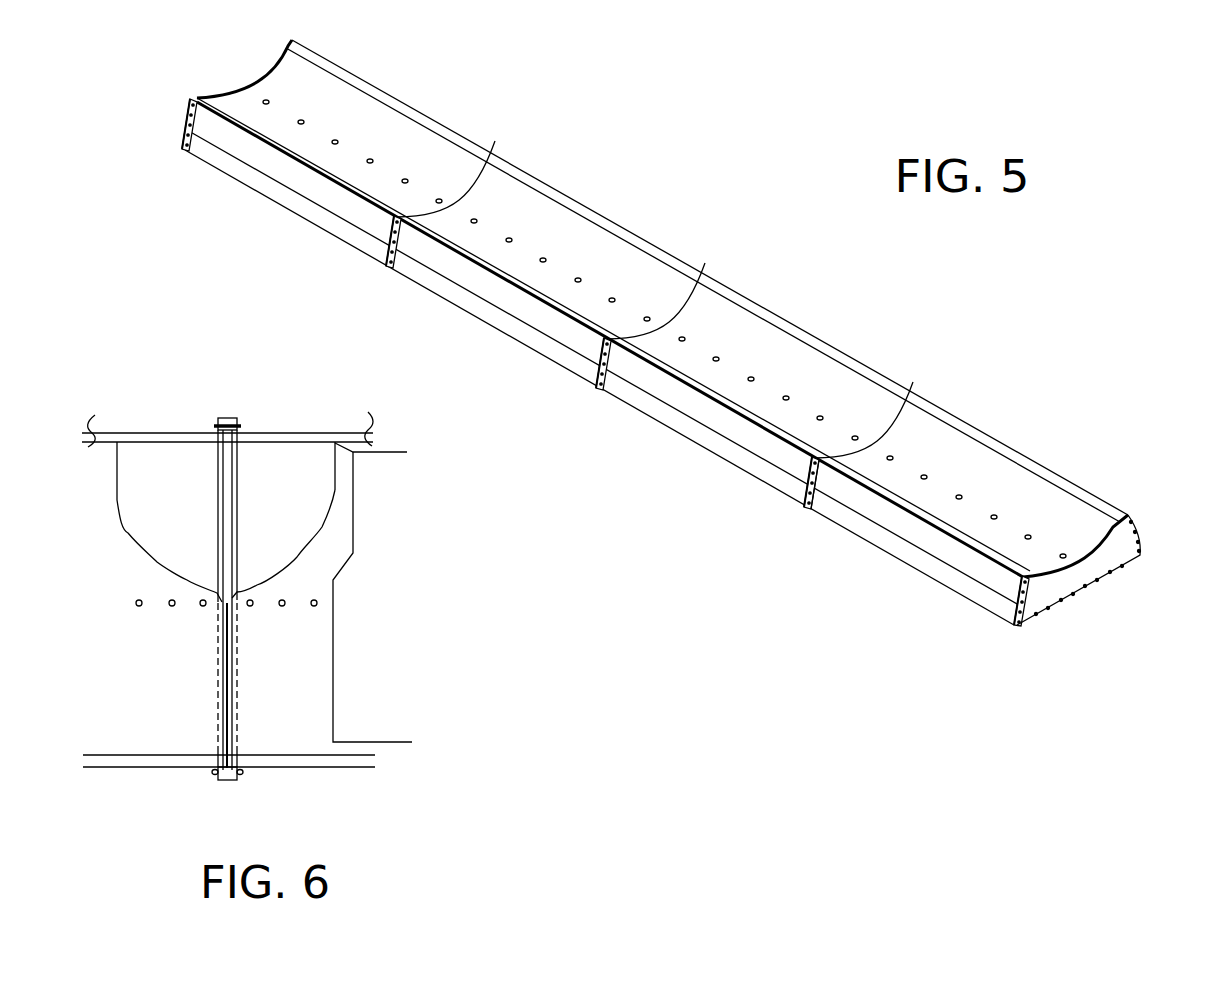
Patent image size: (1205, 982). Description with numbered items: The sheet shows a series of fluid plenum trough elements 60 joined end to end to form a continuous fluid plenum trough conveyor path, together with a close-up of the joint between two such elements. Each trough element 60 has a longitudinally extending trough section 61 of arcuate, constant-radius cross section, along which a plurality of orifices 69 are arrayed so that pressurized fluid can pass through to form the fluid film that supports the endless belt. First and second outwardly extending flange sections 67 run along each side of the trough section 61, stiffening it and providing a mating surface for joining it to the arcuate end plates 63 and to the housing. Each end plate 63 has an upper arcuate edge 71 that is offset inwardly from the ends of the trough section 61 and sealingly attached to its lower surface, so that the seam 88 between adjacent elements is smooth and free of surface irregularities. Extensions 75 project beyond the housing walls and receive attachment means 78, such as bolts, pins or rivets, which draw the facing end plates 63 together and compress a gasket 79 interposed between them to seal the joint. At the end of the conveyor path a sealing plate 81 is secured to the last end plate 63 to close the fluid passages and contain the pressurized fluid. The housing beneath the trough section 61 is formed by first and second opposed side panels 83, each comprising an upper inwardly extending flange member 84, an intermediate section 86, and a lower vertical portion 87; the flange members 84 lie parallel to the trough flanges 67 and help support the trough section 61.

In FIG. 5, the fluid plenum trough element 60 is at (326, 54).
In FIG. 5, the trough section 61 is at (388, 120).
In FIG. 6, the trough section 61 is at (153, 606).
In FIG. 5, the arcuate end plate 63 is at (188, 153).
In FIG. 6, the arcuate end plate 63 is at (220, 418).
In FIG. 5, the outwardly extending flange section 67 is at (358, 78).
In FIG. 6, the outwardly extending flange section 67 is at (95, 415).
In FIG. 5, the orifice 69 is at (264, 98).
In FIG. 6, the arcuate edge 71 is at (214, 424).
In FIG. 5, the extension 75 is at (806, 500).
In FIG. 5, the attachment means 78 is at (387, 258).
In FIG. 5, the gasket 79 is at (181, 151).
In FIG. 6, the gasket 79 is at (240, 430).
In FIG. 5, the sealing plate 81 is at (186, 128).
In FIG. 6, the sealing plate 81 is at (350, 687).
In FIG. 5, the side panel 83 is at (259, 168).
In FIG. 6, the upper inwardly extending flange member 84 is at (156, 434).
In FIG. 5, the intermediate section 86 is at (318, 197).
In FIG. 5, the lower vertical portion 87 is at (335, 222).
In FIG. 5, the seam 88 is at (503, 155).
In FIG. 6, the seam 88 is at (228, 680).